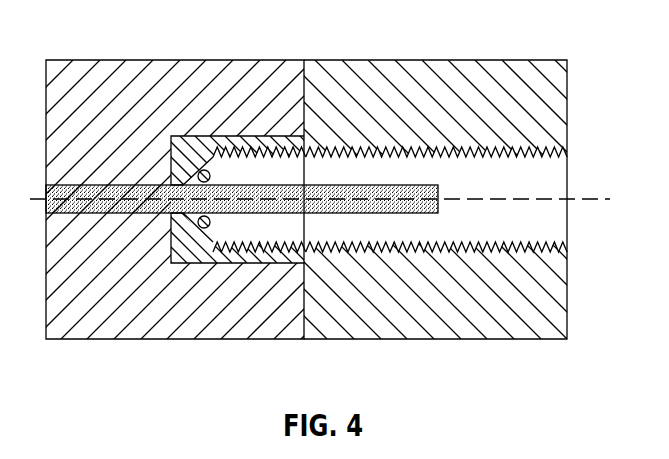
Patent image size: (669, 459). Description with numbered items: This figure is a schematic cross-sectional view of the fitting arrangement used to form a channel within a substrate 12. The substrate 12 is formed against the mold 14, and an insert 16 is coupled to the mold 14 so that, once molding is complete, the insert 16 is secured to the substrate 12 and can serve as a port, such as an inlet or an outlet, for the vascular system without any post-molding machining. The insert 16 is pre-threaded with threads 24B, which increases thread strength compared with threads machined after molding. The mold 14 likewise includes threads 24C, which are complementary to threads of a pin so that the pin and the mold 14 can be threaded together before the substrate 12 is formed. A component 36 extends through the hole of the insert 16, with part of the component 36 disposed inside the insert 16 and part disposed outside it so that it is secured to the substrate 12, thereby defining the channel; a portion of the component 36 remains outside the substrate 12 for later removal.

The substrate 12 is at (161, 66).
The mold 14 is at (444, 66).
The insert 16 is at (199, 143).
The threads 24B is at (291, 243).
The threads 24C is at (528, 243).
The component 36 is at (426, 186).